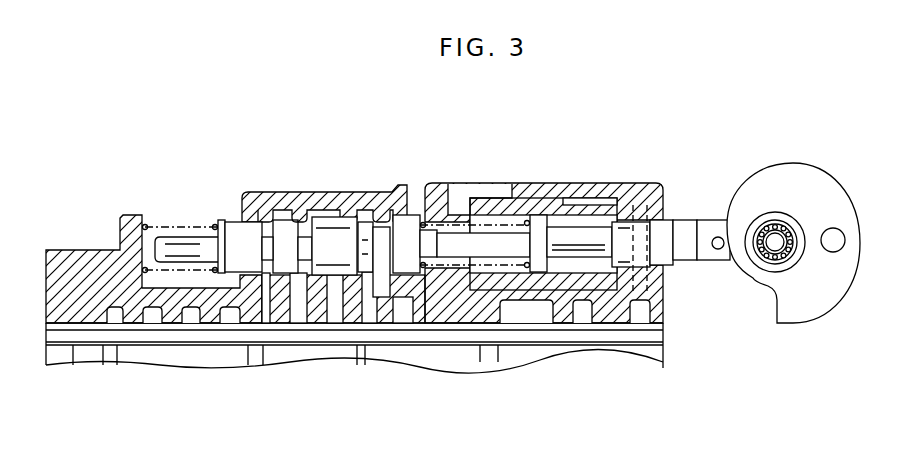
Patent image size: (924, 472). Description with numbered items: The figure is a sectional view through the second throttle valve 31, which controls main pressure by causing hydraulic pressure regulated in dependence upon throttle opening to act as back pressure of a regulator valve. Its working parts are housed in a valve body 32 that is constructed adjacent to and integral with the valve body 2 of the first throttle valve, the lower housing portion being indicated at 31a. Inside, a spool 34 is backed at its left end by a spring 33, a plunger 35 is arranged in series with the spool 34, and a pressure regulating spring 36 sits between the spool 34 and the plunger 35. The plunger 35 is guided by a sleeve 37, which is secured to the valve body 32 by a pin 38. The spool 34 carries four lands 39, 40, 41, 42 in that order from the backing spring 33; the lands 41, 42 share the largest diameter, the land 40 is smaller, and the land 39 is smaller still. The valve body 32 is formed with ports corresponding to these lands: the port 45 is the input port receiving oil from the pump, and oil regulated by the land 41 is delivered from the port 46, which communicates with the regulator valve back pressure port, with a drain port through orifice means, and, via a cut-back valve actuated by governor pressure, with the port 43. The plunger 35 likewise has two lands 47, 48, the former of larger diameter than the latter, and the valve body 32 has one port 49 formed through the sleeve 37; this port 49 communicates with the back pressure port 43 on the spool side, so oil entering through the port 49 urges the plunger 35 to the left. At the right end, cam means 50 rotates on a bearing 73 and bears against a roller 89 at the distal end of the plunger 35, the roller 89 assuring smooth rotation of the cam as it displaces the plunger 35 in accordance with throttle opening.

The valve body 2 is at (381, 176).
The second throttle valve 31 is at (291, 178).
The lower housing portion 31a is at (625, 268).
The valve body 32 is at (332, 202).
The spring 33 is at (162, 223).
The spool 34 is at (307, 247).
The plunger 35 is at (578, 238).
The pressure regulating spring 36 is at (493, 290).
The sleeve 37 is at (548, 197).
The pin 38 is at (670, 283).
The land 39 is at (235, 230).
The land 40 is at (285, 246).
The land 41 is at (337, 264).
The land 42 is at (411, 227).
The port 43 is at (265, 308).
The port 45 is at (350, 315).
The port 46 is at (387, 310).
The land 47 is at (537, 274).
The land 48 is at (667, 261).
The port 49 is at (577, 278).
The cam means 50 is at (817, 160).
The bearing 73 is at (797, 232).
The roller 89 is at (740, 252).